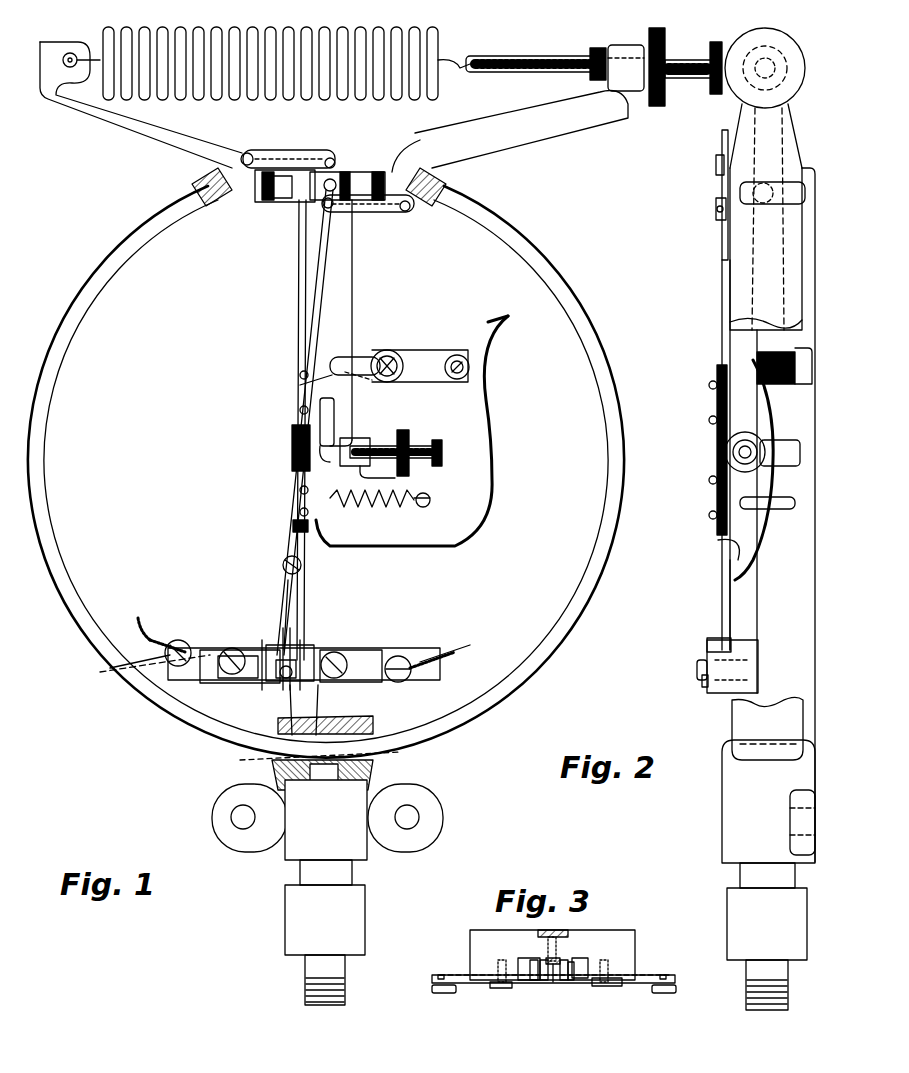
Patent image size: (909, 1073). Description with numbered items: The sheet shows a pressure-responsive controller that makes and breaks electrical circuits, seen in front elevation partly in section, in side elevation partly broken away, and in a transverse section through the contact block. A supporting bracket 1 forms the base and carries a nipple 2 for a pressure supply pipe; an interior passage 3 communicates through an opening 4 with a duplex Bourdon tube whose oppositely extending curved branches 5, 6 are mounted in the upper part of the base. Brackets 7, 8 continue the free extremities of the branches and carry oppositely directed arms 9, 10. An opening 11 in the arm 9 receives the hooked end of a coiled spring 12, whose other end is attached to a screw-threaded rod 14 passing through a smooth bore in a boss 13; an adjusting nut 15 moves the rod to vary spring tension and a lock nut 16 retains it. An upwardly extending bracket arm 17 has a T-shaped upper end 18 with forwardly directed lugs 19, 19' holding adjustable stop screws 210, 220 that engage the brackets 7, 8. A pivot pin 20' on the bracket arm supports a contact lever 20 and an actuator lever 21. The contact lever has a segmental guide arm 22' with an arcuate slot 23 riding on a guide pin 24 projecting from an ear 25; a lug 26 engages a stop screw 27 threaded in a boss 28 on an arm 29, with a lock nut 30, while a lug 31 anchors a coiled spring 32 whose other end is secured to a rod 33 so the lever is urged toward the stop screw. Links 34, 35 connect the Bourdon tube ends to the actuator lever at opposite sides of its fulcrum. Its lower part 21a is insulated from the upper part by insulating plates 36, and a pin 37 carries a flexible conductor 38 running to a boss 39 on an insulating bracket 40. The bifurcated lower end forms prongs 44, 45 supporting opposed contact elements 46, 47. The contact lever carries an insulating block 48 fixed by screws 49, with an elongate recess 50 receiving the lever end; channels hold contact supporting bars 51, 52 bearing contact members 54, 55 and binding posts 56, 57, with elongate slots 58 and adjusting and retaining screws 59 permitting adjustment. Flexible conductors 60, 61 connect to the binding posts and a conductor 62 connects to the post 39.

In FIG. 1, the supporting bracket 1 is at (275, 840).
In FIG. 2, the supporting bracket 1 is at (735, 832).
In FIG. 1, the nipple 2 is at (304, 982).
In FIG. 2, the nipple 2 is at (790, 998).
In FIG. 1, the interior passage 3 is at (372, 778).
In FIG. 1, the opening 4 is at (275, 770).
In FIG. 1, the curved branch 5 is at (262, 735).
In FIG. 1, the curved branch 6 is at (458, 728).
In FIG. 2, the curved branch 6 is at (738, 722).
In FIG. 1, the bracket 7 is at (228, 190).
In FIG. 1, the bracket 8 is at (440, 180).
In FIG. 1, the arm 9 is at (118, 128).
In FIG. 1, the arm 10 is at (545, 135).
In FIG. 2, the arm 10 is at (740, 140).
In FIG. 1, the opening 11 is at (68, 52).
In FIG. 1, the coiled spring 12 is at (180, 30).
In FIG. 1, the boss 13 is at (622, 52).
In FIG. 1, the screw-threaded rod 14 is at (545, 57).
In FIG. 2, the screw-threaded rod 14 is at (740, 100).
In FIG. 1, the adjusting nut 15 is at (662, 28).
In FIG. 2, the adjusting nut 15 is at (752, 30).
In FIG. 1, the lock nut 16 is at (597, 46).
In FIG. 1, the bracket arm 17 is at (354, 300).
In FIG. 2, the bracket arm 17 is at (730, 560).
In FIG. 1, the T-shaped upper end 18 is at (355, 170).
In FIG. 1, the lug 19 is at (285, 209).
In FIG. 1, the lug 19' is at (389, 157).
In FIG. 1, the contact lever 20 is at (328, 422).
In FIG. 2, the contact lever 20 is at (763, 455).
In FIG. 3, the contact lever 20 is at (575, 941).
In FIG. 1, the pivot pin 20' is at (342, 152).
In FIG. 2, the pivot pin 20' is at (696, 175).
In FIG. 1, the actuator lever 21 is at (332, 272).
In FIG. 2, the actuator lever 21 is at (722, 170).
In FIG. 1, the lower part of actuator lever 21a is at (278, 600).
In FIG. 2, the lower part of actuator lever 21a is at (725, 612).
In FIG. 3, the lower part of actuator lever 21a is at (555, 983).
In FIG. 1, the segmental guide arm 22' is at (359, 338).
In FIG. 1, the arcuate slot 23 is at (370, 355).
In FIG. 1, the guide pin 24 is at (395, 352).
In FIG. 1, the ear 25 is at (350, 372).
In FIG. 2, the ear 25 is at (800, 384).
In FIG. 1, the lug 26 is at (338, 430).
In FIG. 1, the stop screw 27 is at (362, 440).
In FIG. 1, the boss 28 is at (400, 480).
In FIG. 1, the arm 29 is at (380, 446).
In FIG. 2, the arm 29 is at (800, 448).
In FIG. 1, the lock nut 30 is at (410, 432).
In FIG. 1, the lug 31 is at (326, 520).
In FIG. 1, the coiled spring 32 is at (375, 506).
In FIG. 2, the coiled spring 32 is at (718, 548).
In FIG. 1, the rod 33 is at (418, 507).
In FIG. 2, the rod 33 is at (796, 504).
In FIG. 1, the link 34 is at (262, 150).
In FIG. 2, the link 34 is at (722, 172).
In FIG. 1, the link 35 is at (395, 212).
In FIG. 2, the link 35 is at (716, 215).
In FIG. 1, the insulating plates 36 is at (290, 440).
In FIG. 2, the insulating plates 36 is at (730, 366).
In FIG. 1, the pin 37 is at (284, 560).
In FIG. 1, the flexible conductor 38 is at (468, 545).
In FIG. 2, the flexible conductor 38 is at (770, 530).
In FIG. 1, the boss 39 is at (470, 368).
In FIG. 1, the insulating bracket 40 is at (440, 352).
In FIG. 1, the prong 44 is at (270, 645).
In FIG. 3, the prong 44 is at (545, 983).
In FIG. 1, the prong 45 is at (300, 645).
In FIG. 3, the prong 45 is at (562, 982).
In FIG. 1, the contact element 46 is at (282, 690).
In FIG. 3, the contact element 46 is at (535, 983).
In FIG. 1, the contact element 47 is at (296, 684).
In FIG. 3, the contact element 47 is at (590, 965).
In FIG. 1, the insulating block 48 is at (225, 700).
In FIG. 2, the insulating block 48 is at (750, 676).
In FIG. 3, the insulating block 48 is at (478, 942).
In FIG. 1, the screws 49 is at (292, 718).
In FIG. 3, the screws 49 is at (546, 946).
In FIG. 1, the elongate recess 50 is at (255, 680).
In FIG. 3, the elongate recess 50 is at (520, 968).
In FIG. 1, the contact supporting bar 51 is at (200, 690).
In FIG. 3, the contact supporting bar 51 is at (470, 985).
In FIG. 1, the contact supporting bar 52 is at (372, 684).
In FIG. 2, the contact supporting bar 52 is at (705, 688).
In FIG. 3, the contact supporting bar 52 is at (650, 976).
In FIG. 1, the contact member 54 is at (210, 652).
In FIG. 3, the contact member 54 is at (530, 983).
In FIG. 1, the contact member 55 is at (306, 655).
In FIG. 3, the contact member 55 is at (572, 983).
In FIG. 1, the binding post 56 is at (124, 674).
In FIG. 3, the binding post 56 is at (432, 988).
In FIG. 1, the binding post 57 is at (420, 672).
In FIG. 2, the binding post 57 is at (696, 676).
In FIG. 3, the binding post 57 is at (676, 990).
In FIG. 1, the elongate slots 58 is at (212, 683).
In FIG. 1, the adjusting and retaining screws 59 is at (165, 653).
In FIG. 3, the adjusting and retaining screws 59 is at (504, 982).
In FIG. 1, the flexible conductor 60 is at (147, 619).
In FIG. 1, the flexible conductor 61 is at (460, 648).
In FIG. 1, the conductor 62 is at (510, 318).
In FIG. 1, the adjustable stop screw 210 is at (266, 200).
In FIG. 1, the adjustable stop screw 220 is at (415, 160).